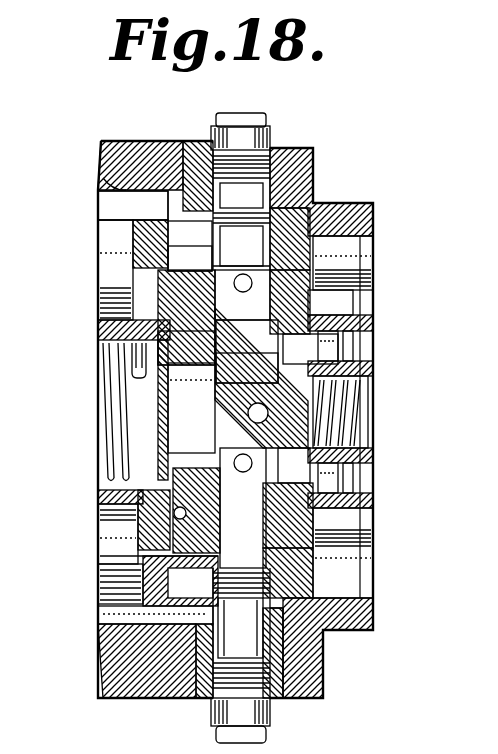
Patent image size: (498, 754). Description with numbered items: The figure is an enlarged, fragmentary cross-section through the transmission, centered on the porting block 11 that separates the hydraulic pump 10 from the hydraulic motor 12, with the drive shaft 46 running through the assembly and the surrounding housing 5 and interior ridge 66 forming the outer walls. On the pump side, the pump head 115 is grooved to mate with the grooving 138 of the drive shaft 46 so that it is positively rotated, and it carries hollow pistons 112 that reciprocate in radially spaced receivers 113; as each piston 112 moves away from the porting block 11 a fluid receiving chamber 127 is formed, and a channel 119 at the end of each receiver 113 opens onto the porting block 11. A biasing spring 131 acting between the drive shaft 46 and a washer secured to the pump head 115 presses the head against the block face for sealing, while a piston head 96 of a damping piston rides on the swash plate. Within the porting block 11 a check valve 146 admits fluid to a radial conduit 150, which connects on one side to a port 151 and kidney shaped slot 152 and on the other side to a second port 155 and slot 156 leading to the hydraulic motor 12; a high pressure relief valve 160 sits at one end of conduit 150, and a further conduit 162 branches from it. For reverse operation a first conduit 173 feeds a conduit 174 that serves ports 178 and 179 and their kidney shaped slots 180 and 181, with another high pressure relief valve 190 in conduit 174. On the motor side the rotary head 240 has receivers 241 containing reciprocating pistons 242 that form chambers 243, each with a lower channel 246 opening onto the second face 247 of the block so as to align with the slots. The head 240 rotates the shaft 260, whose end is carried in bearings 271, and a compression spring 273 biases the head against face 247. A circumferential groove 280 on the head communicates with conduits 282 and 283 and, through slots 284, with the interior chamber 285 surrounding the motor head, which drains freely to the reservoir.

The housing 5 is at (326, 199).
The hydraulic pump 10 is at (350, 570).
The porting block 11 is at (268, 654).
The hydraulic motor 12 is at (92, 198).
The drive shaft 46 is at (356, 383).
The interior ridge 66 is at (350, 242).
The piston head 96 is at (346, 308).
The piston 112 is at (350, 333).
The receiver 113 is at (350, 357).
The pump head 115 is at (346, 500).
The channel 119 is at (292, 337).
The fluid receiving chamber 127 is at (325, 325).
The biasing spring 131 is at (350, 408).
The roller bearings 138 is at (250, 372).
The check valve 146 is at (250, 380).
The conduit 150 is at (186, 317).
The port 151 is at (280, 335).
The kidney shaped slot 152 is at (283, 328).
The second port 155 is at (189, 246).
The slot 156 is at (172, 269).
The high pressure relief valve 160 is at (290, 239).
The conduit 162 is at (235, 284).
The first conduit 173 is at (240, 428).
The conduit 174 is at (250, 544).
The port 178 is at (288, 515).
The port 179 is at (174, 504).
The kidney shaped slot 180 is at (294, 465).
The kidney shaped slot 181 is at (196, 510).
The high pressure relief valve 190 is at (268, 630).
The rotary head 240 is at (92, 328).
The receiver 241 is at (100, 517).
The reciprocating piston 242 is at (100, 542).
The fluid receiving chamber 243 is at (100, 602).
The channel 246 is at (100, 572).
The second face 247 is at (152, 334).
The shaft 260 is at (210, 404).
The bearings 271 is at (125, 436).
The compression spring 273 is at (103, 410).
The circumferential groove 280 is at (153, 408).
The conduit 282 is at (155, 419).
The conduit 283 is at (185, 596).
The slot 284 is at (155, 661).
The interior chamber 285 is at (92, 168).